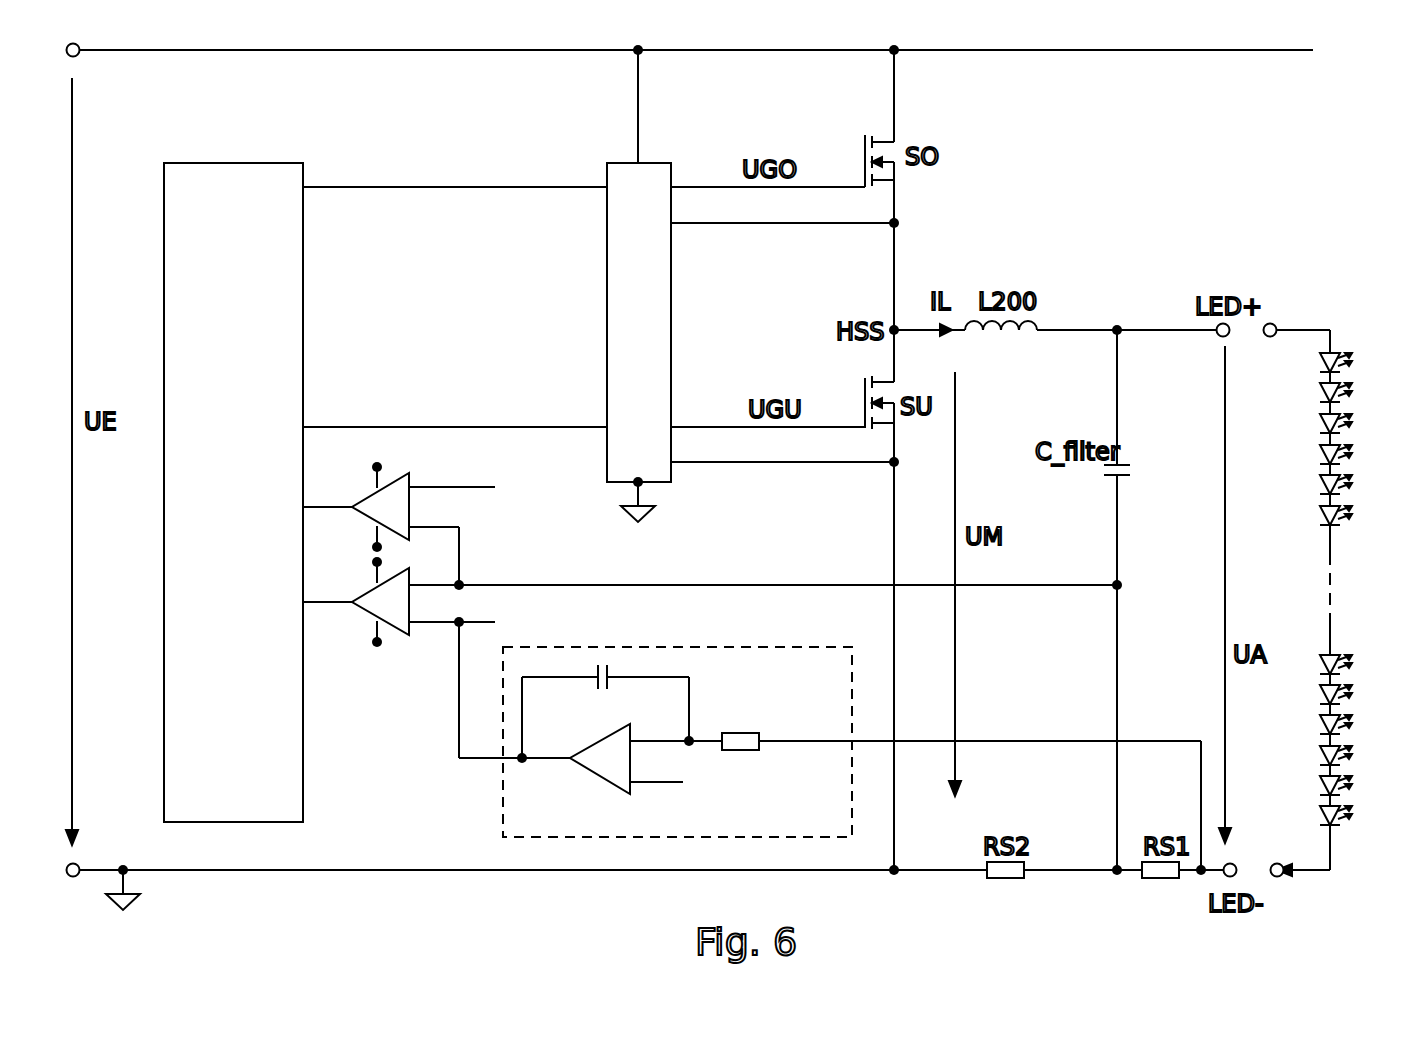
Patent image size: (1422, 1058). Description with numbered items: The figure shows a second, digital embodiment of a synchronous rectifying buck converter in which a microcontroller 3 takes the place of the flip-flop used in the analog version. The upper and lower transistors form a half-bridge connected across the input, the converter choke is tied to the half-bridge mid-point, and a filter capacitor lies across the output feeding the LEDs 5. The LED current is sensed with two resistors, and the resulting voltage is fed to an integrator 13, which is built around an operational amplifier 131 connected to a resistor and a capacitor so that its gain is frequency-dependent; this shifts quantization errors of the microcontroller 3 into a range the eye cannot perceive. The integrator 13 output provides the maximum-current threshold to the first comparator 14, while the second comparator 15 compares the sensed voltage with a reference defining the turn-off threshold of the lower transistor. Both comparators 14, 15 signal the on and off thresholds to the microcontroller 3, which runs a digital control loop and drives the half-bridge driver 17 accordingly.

The microcontroller 3 is at (238, 506).
The half-bridge driver 17 is at (652, 330).
The second comparator 15 is at (368, 522).
The first comparator 14 is at (362, 612).
The integrator 13 is at (830, 745).
The operational amplifier 131 is at (597, 738).
The LEDs 5 is at (1338, 318).